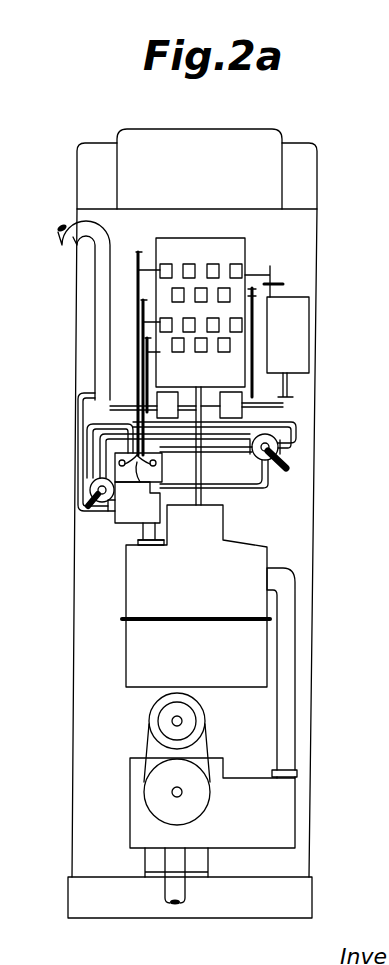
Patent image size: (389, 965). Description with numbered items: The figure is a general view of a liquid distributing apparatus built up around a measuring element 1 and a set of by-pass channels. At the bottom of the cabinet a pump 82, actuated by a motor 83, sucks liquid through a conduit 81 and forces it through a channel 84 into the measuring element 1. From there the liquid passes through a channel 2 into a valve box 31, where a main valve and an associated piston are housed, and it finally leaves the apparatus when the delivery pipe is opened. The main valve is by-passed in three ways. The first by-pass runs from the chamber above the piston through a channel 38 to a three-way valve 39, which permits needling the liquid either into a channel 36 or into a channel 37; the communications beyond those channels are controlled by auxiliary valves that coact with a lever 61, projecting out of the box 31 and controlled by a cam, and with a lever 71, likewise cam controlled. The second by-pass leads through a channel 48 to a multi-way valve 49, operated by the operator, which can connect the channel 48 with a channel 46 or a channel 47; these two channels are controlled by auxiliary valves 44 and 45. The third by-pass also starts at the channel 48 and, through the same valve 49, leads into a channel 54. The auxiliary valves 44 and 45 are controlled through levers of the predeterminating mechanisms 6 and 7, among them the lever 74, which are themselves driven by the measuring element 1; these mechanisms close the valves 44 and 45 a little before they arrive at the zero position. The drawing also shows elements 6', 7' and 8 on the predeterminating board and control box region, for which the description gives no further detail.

The measuring element 1 is at (268, 556).
The channel 2 is at (104, 254).
The predeterminating mechanism 6 is at (223, 360).
The contact element 6' is at (258, 339).
The predeterminating mechanism 7 is at (204, 259).
The contact element 7' is at (168, 247).
The control box 8 is at (303, 336).
The valve box 31 is at (132, 518).
The channel 36 is at (231, 452).
The channel 37 is at (272, 442).
The channel 38 is at (245, 489).
The three-way valve 39 is at (280, 448).
The auxiliary valve 44 is at (166, 393).
The auxiliary valve 45 is at (284, 412).
The channel 46 is at (88, 426).
The channel 47 is at (103, 461).
The channel 48 is at (112, 512).
The multi-way valve 49 is at (90, 500).
The channel 54 is at (80, 398).
The lever 61 is at (163, 462).
The lever 71 is at (137, 502).
The lever 74 is at (256, 294).
The conduit 81 is at (172, 906).
The pump 82 is at (286, 815).
The motor 83 is at (198, 716).
The channel 84 is at (291, 665).